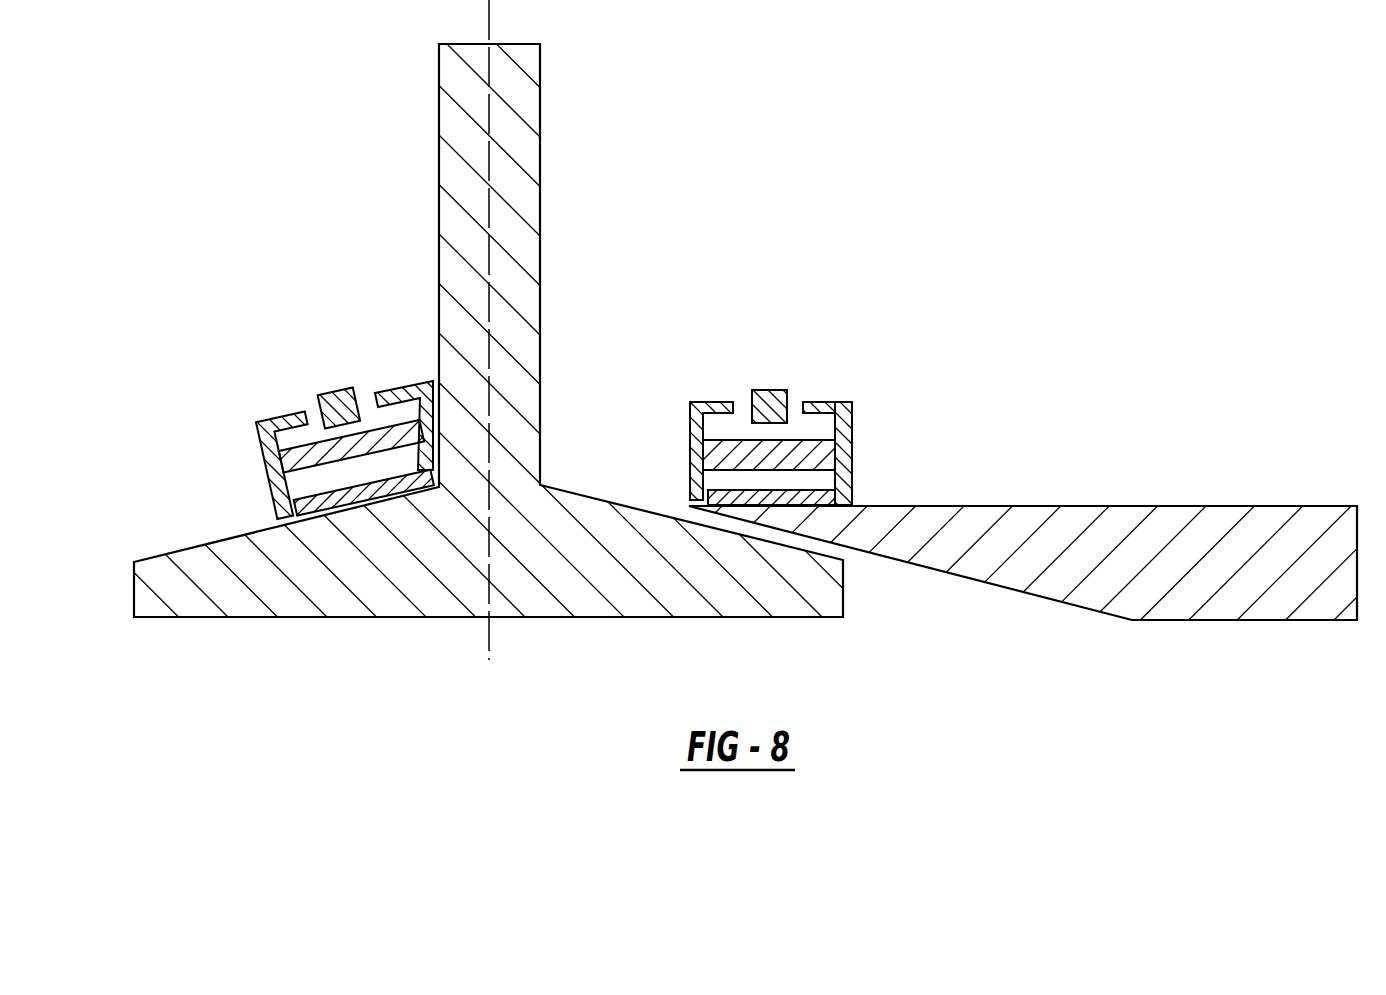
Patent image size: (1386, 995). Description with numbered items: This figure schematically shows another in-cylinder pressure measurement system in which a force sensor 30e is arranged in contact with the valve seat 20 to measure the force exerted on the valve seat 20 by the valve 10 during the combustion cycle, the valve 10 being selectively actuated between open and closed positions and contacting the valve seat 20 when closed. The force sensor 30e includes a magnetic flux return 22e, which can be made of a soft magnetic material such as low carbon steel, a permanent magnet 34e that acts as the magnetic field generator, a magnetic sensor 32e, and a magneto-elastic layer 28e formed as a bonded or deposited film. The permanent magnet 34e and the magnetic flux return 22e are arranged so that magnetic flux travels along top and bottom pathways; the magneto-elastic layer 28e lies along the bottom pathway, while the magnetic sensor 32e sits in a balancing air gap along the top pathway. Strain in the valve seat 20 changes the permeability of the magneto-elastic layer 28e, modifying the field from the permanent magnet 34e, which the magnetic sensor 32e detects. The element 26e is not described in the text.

The valve 10 is at (743, 585).
The valve seat 20 is at (1193, 590).
The force sensor 30e is at (232, 435).
The magnetic flux return 22e is at (850, 448).
The pole piece / flange 26e is at (797, 407).
The magneto-elastic layer 28e is at (822, 497).
The magnetic sensor 32e is at (772, 400).
The permanent magnet 34e is at (737, 450).